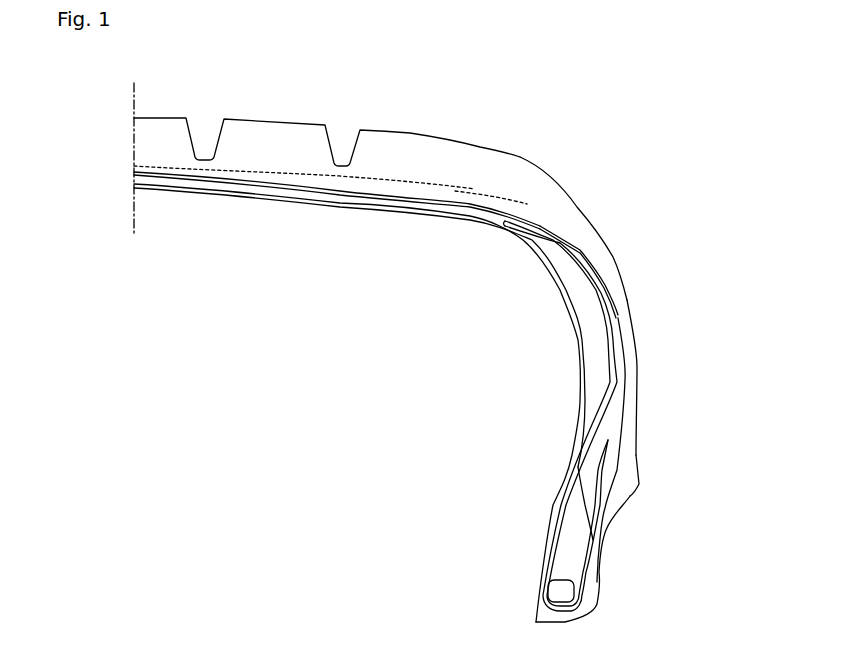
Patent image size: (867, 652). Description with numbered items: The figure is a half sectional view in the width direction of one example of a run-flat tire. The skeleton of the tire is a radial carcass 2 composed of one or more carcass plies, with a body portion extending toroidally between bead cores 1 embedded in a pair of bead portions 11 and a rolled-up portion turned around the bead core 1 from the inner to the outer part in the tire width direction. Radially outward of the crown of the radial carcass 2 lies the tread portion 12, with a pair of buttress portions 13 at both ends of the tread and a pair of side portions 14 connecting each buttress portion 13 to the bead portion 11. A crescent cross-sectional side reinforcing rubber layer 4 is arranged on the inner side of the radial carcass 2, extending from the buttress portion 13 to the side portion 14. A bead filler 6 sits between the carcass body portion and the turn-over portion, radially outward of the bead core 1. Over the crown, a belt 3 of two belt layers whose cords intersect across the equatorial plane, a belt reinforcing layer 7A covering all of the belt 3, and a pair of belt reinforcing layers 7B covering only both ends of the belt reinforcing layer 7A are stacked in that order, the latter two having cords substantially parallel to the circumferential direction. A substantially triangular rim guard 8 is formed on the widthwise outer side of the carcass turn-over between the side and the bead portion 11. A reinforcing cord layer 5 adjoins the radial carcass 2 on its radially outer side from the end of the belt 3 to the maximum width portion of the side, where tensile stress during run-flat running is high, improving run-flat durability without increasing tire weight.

The bead core 1 is at (560, 588).
The radial carcass 2 is at (560, 526).
The belt 3 is at (235, 177).
The side reinforcing rubber layer 4 is at (588, 320).
The reinforcing cord layer 5 is at (598, 268).
The bead filler 6 is at (577, 533).
The belt reinforcing layer 7A is at (388, 182).
The belt reinforcing layer 7B is at (478, 188).
The rim guard 8 is at (630, 482).
The bead portion 11 is at (598, 567).
The tread portion 12 is at (282, 122).
The buttress portion 13 is at (583, 210).
The side portion 14 is at (636, 380).